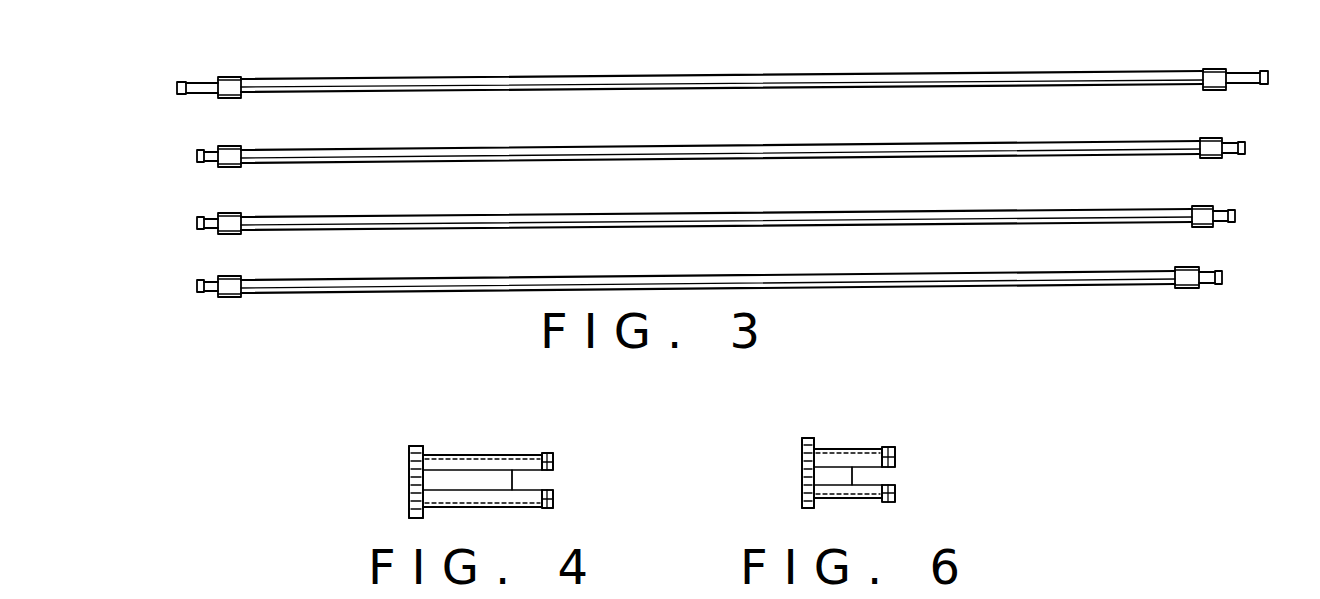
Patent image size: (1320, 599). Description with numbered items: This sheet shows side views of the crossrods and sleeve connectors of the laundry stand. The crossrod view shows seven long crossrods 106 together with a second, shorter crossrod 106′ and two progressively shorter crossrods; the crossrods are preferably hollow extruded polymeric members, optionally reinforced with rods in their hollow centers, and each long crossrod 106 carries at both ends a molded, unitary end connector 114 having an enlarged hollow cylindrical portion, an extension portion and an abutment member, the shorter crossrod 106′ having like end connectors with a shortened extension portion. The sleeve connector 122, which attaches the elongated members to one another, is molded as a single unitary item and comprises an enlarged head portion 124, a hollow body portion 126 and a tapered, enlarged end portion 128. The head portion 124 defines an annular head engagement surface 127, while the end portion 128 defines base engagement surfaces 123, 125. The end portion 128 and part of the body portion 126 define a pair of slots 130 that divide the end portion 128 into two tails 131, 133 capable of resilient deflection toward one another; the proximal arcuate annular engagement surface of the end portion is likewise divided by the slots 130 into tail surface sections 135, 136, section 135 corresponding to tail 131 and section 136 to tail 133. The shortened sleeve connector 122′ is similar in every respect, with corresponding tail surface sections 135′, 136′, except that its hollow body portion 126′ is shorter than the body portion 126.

In FIG. 3, the long crossrod 106 is at (1013, 90).
In FIG. 3, the second, shorter crossrod 106′ is at (1003, 158).
In FIG. 3, the end connector 114 is at (208, 66).
In FIG. 4, the sleeve connector 122 is at (386, 492).
In FIG. 6, the shortened sleeve connector 122′ is at (916, 494).
In FIG. 4, the base engagement surface 123 is at (556, 495).
In FIG. 6, the base engagement surface 123 is at (897, 487).
In FIG. 4, the enlarged head portion 124 is at (415, 446).
In FIG. 6, the enlarged head portion 124 is at (806, 438).
In FIG. 4, the base engagement surface 125 is at (556, 465).
In FIG. 6, the base engagement surface 125 is at (897, 458).
In FIG. 4, the hollow body portion 126 is at (478, 455).
In FIG. 6, the hollow body portion 126′ is at (840, 448).
In FIG. 4, the annular head engagement surface 127 is at (424, 447).
In FIG. 6, the annular head engagement surface 127 is at (815, 446).
In FIG. 4, the tapered, enlarged end portion 128 is at (562, 512).
In FIG. 4, the slot 130 is at (543, 478).
In FIG. 6, the slot 130 is at (885, 473).
In FIG. 4, the tail 131 is at (550, 453).
In FIG. 6, the tail 131 is at (895, 452).
In FIG. 4, the tail 133 is at (546, 509).
In FIG. 6, the tail 133 is at (887, 503).
In FIG. 4, the tail surface section 135 is at (542, 453).
In FIG. 6, the tail surface section 135′ is at (878, 447).
In FIG. 4, the tail surface section 136 is at (538, 505).
In FIG. 6, the tail surface section 136′ is at (882, 502).